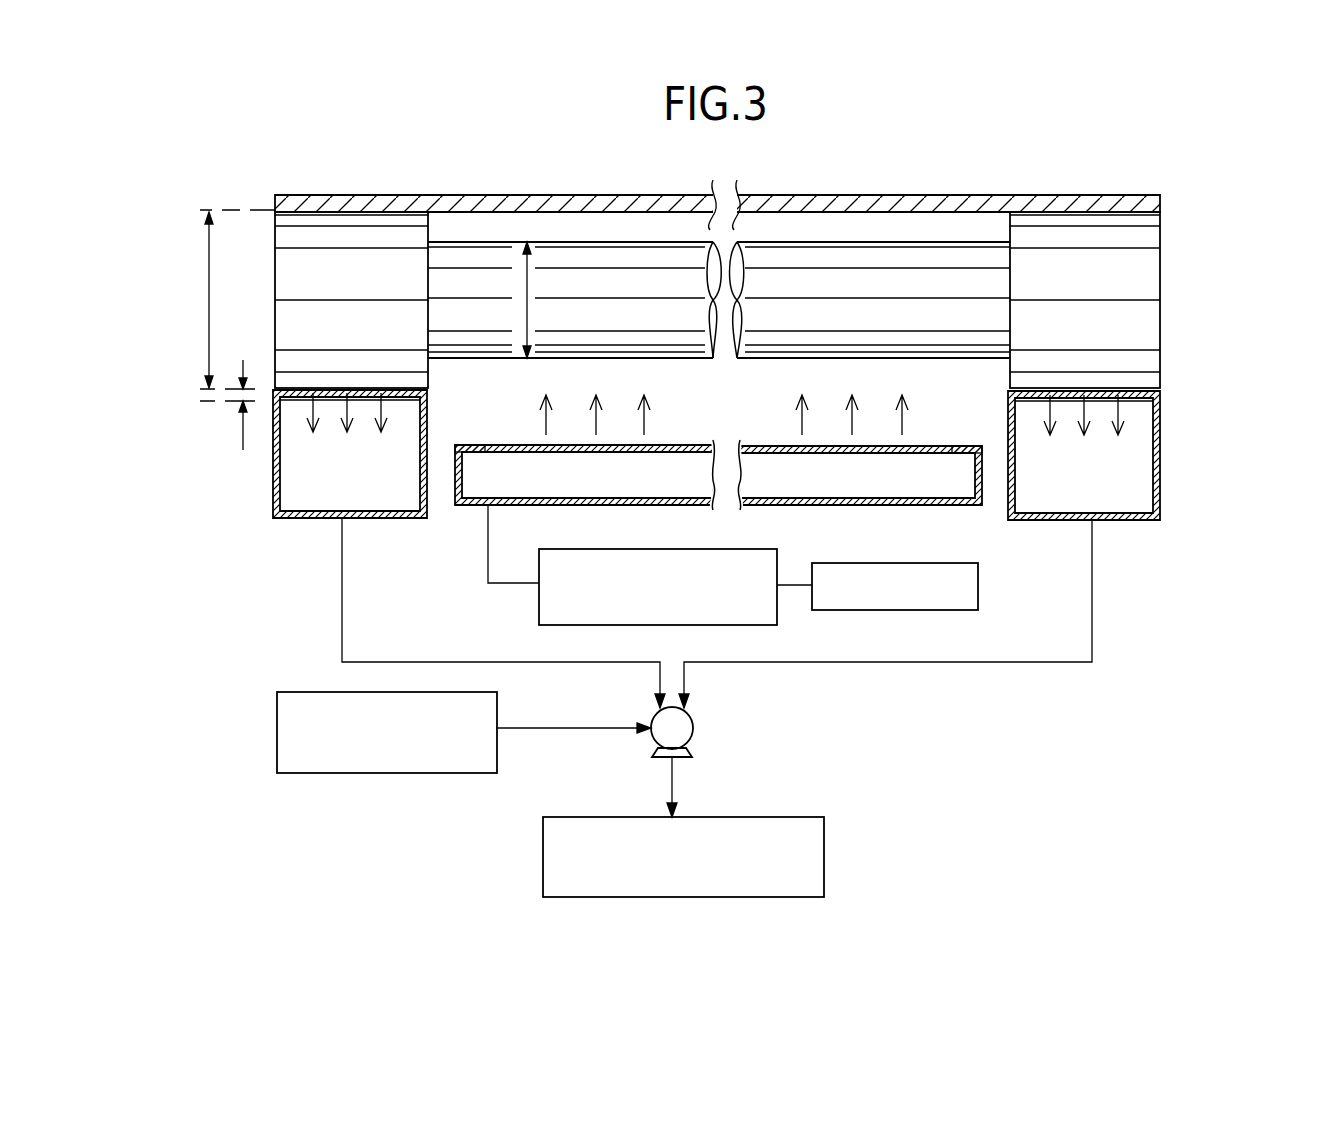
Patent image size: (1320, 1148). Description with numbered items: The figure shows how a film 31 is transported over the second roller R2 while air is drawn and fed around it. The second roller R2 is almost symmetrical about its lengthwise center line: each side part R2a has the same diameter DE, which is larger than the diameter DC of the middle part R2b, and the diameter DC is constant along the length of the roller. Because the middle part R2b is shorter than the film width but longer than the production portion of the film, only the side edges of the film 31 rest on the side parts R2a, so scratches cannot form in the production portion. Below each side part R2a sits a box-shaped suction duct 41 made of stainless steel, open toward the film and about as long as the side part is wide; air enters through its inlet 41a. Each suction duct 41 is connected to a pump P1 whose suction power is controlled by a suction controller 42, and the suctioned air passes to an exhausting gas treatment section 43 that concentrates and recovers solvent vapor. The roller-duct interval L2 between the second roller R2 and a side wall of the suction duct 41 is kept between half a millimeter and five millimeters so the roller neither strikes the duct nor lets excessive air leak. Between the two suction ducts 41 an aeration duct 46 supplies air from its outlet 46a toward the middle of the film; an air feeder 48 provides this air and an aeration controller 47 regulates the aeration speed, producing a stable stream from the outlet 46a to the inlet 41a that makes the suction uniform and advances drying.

The second roller R2 is at (1176, 212).
The side part R2a is at (288, 245).
The middle part R2b is at (925, 262).
The film 31 is at (531, 195).
The suction duct 41 is at (303, 520).
The inlet 41a is at (410, 400).
The suction controller 42 is at (277, 735).
The exhausting gas treatment section 43 is at (824, 855).
The aeration duct 46 is at (785, 506).
The outlet 46a is at (930, 448).
The aeration controller 47 is at (539, 620).
The air feeder 48 is at (978, 597).
The pump P1 is at (694, 722).
The diameter of side part DE is at (222, 299).
The diameter of middle part DC is at (543, 300).
The roller-duct interval L2 is at (227, 405).